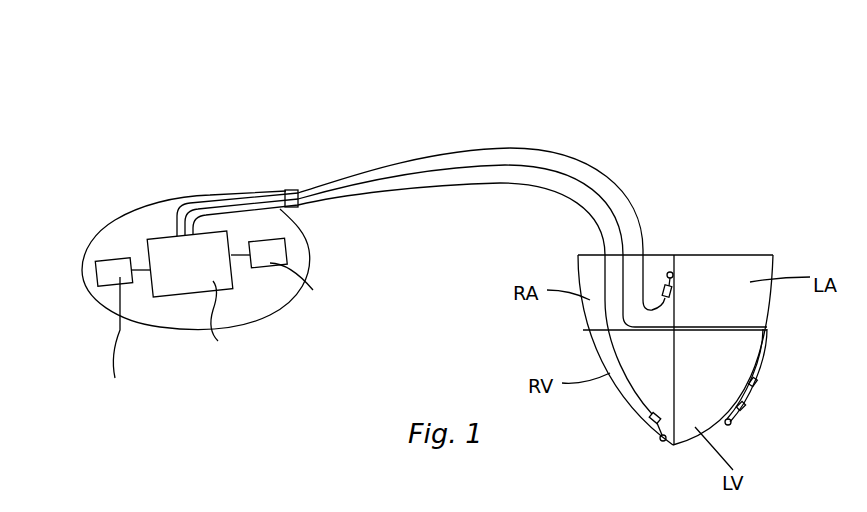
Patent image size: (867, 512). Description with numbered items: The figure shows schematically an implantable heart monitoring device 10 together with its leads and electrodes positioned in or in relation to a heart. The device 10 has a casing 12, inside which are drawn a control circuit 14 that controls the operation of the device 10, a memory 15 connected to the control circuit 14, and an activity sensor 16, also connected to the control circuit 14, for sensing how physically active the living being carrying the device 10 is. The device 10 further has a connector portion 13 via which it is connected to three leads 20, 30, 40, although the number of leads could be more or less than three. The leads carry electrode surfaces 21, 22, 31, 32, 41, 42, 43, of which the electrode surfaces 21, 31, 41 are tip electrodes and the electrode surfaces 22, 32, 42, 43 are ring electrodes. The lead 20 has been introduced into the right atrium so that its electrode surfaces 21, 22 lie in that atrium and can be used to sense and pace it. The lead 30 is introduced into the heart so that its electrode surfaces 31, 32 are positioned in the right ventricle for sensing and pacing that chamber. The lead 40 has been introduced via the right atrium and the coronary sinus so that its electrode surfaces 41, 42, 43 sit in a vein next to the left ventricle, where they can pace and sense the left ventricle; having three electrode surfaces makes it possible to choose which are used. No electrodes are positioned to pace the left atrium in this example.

The implantable heart monitoring device 10 is at (147, 182).
The casing 12 is at (122, 227).
The connector portion 13 is at (289, 189).
The control circuit 14 is at (197, 285).
The memory 15 is at (283, 244).
The activity sensor 16 is at (103, 267).
The lead 20 is at (570, 152).
The electrode surface 21 is at (670, 271).
The electrode surface 22 is at (675, 290).
The lead 30 is at (478, 184).
The electrode surface 31 is at (662, 442).
The electrode surface 32 is at (643, 417).
The lead 40 is at (528, 166).
The electrode surface 41 is at (731, 425).
The electrode surface 42 is at (745, 407).
The electrode surface 43 is at (757, 383).